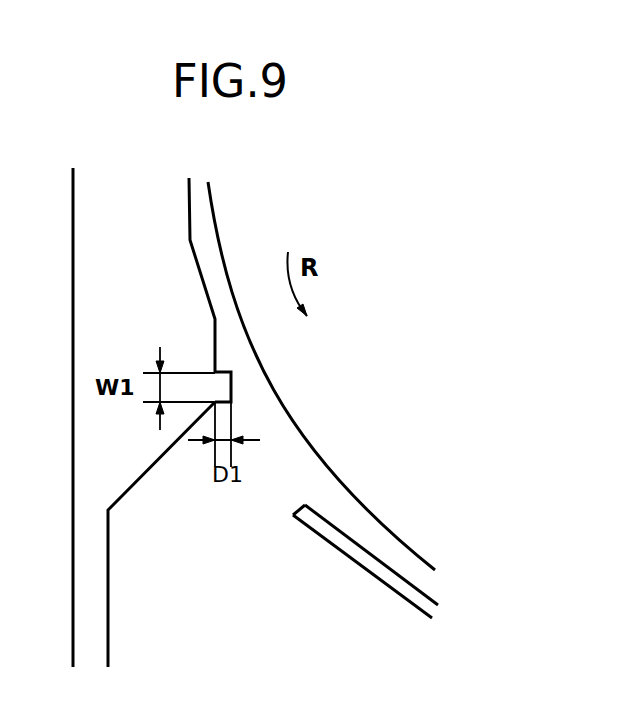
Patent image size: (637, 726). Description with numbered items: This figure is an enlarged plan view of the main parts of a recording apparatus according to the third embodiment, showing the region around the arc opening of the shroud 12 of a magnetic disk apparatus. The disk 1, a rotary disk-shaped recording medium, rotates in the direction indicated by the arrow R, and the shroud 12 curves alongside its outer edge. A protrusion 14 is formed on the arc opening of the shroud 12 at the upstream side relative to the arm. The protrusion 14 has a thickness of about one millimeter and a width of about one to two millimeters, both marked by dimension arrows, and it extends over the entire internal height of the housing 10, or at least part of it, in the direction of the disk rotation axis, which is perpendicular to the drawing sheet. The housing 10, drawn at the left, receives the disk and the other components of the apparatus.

The disk 1 is at (390, 489).
The housing 10 is at (85, 586).
The shroud 12 is at (206, 250).
The protrusion 14 is at (231, 388).